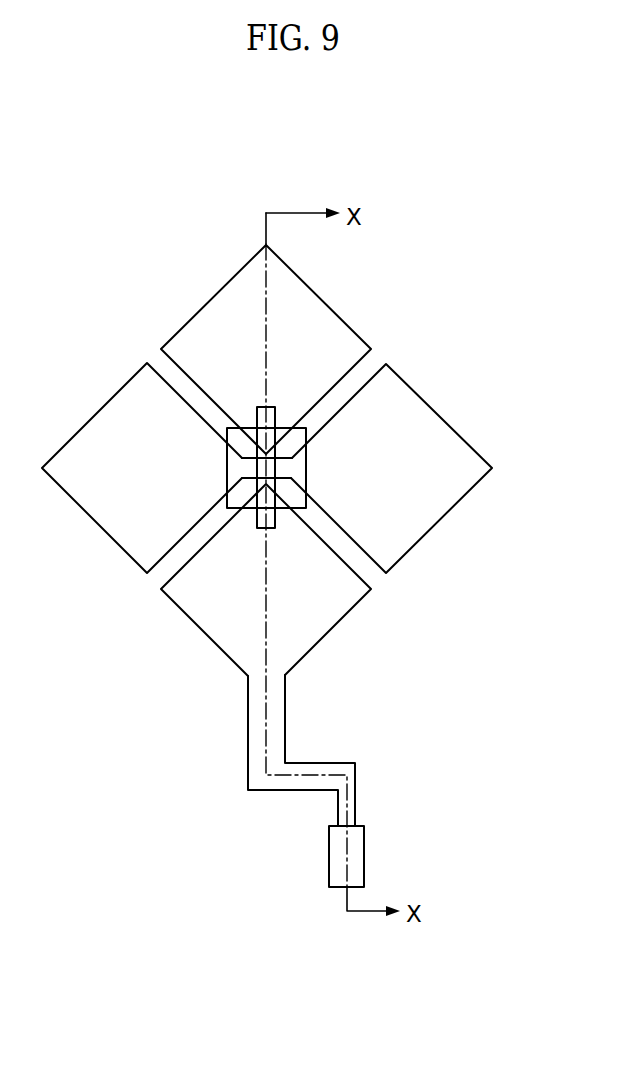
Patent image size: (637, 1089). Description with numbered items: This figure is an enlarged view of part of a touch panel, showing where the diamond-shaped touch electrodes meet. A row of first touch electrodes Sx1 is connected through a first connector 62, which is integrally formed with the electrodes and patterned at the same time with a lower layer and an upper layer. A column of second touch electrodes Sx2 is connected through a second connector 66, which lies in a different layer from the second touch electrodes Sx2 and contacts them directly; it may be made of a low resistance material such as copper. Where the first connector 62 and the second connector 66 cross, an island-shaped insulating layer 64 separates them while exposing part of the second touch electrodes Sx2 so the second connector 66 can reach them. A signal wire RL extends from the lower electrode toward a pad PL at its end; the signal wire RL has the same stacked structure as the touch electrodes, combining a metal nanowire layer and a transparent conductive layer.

The first connector 62 is at (282, 457).
The insulating layer 64 is at (276, 467).
The second connector 66 is at (257, 468).
The first touch electrode Sx1 is at (432, 532).
The second touch electrode Sx2 is at (347, 618).
The signal wire RL is at (248, 733).
The pad PL is at (366, 856).